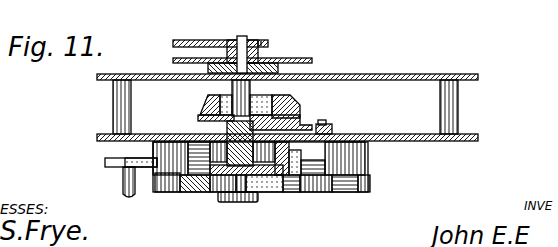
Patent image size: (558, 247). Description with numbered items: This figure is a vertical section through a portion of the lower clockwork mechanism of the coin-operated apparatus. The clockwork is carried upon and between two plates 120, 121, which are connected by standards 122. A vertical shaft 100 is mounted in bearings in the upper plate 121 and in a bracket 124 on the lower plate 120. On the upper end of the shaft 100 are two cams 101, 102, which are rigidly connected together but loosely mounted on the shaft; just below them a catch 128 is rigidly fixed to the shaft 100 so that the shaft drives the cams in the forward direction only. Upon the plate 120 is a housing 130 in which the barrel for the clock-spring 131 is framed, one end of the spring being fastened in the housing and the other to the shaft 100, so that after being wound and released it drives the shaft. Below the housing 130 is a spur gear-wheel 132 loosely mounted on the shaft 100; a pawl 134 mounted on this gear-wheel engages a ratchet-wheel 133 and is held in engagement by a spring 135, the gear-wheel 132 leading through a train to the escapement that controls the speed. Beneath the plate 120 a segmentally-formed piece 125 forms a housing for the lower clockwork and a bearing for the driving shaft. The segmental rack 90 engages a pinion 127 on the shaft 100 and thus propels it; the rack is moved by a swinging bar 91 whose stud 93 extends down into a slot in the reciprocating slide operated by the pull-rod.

The segmental rack 90 is at (296, 176).
The swinging bar 91 is at (105, 163).
The second stud 93 is at (124, 183).
The shaft 100 is at (241, 40).
The lower cam 101 is at (300, 60).
The cam 102 is at (181, 40).
The plate 120 is at (402, 141).
The plate 121 is at (420, 74).
The standards 122 is at (113, 106).
The bracket 124 is at (266, 196).
The segmentally-formed piece 125 is at (370, 188).
The pinion 127 is at (228, 160).
The catch 128 is at (335, 70).
The housing 130 is at (205, 103).
The clock-spring 131 is at (278, 91).
The spur gear-wheel 132 is at (306, 114).
The ratchet-wheel 133 is at (170, 180).
The pawl 134 is at (200, 117).
The spring 135 is at (318, 126).